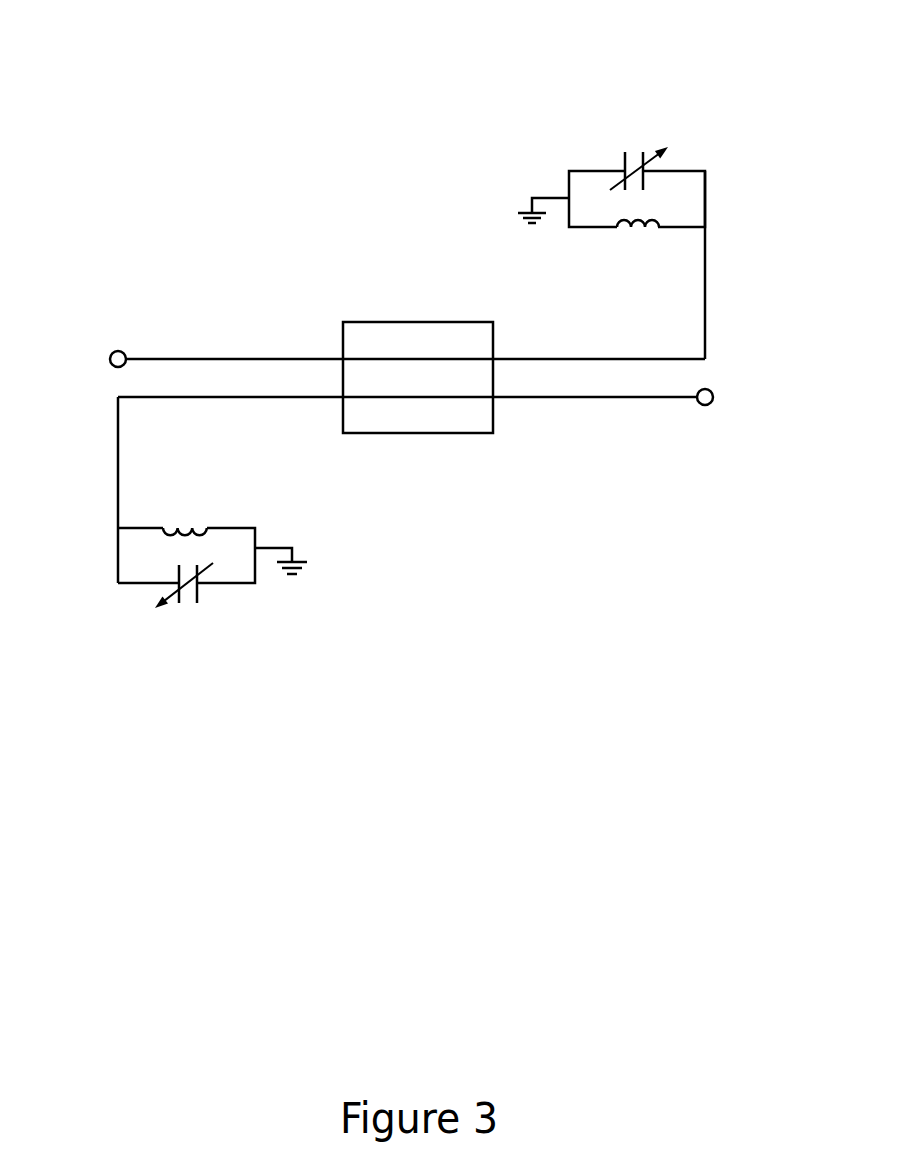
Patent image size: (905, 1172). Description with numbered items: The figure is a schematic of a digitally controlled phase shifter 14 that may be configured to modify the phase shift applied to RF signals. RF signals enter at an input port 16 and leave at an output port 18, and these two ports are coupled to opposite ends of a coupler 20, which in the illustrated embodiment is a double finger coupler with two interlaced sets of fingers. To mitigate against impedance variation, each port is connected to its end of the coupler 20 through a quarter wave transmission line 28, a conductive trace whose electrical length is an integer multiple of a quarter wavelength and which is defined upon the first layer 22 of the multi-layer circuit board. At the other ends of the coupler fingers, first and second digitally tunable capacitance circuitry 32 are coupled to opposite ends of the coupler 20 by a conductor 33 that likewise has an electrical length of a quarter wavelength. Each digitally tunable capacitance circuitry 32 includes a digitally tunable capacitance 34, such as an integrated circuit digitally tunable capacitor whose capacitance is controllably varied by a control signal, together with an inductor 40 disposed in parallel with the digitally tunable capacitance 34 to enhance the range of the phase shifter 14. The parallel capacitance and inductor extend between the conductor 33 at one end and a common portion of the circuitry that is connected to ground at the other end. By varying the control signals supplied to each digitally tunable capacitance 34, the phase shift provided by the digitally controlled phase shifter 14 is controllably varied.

The digitally controlled phase shifter 14 is at (763, 73).
The input port 16 is at (83, 339).
The output port 18 is at (746, 377).
The coupler 20 is at (465, 354).
The first layer 22 is at (430, 408).
The quarter wave transmission line 28 is at (411, 378).
The digitally tunable capacitance circuitry 32 is at (641, 128).
The conductor 33 is at (412, 377).
The digitally tunable capacitance 34 is at (411, 379).
The inductor 40 is at (431, 377).